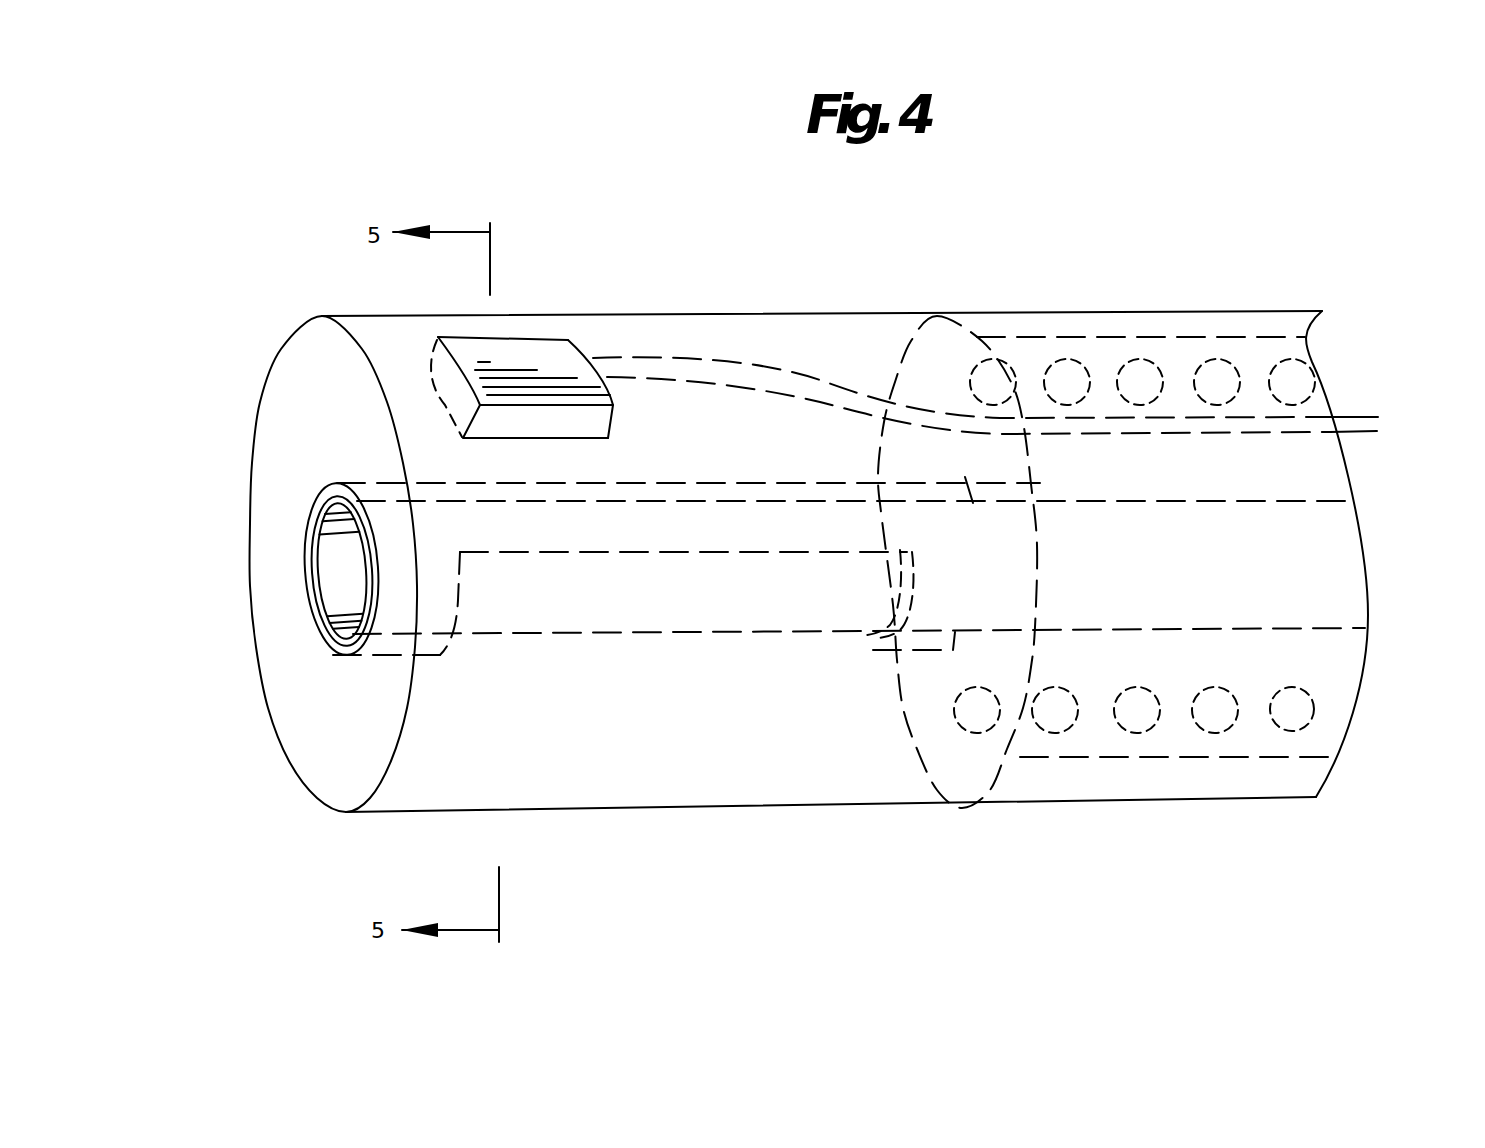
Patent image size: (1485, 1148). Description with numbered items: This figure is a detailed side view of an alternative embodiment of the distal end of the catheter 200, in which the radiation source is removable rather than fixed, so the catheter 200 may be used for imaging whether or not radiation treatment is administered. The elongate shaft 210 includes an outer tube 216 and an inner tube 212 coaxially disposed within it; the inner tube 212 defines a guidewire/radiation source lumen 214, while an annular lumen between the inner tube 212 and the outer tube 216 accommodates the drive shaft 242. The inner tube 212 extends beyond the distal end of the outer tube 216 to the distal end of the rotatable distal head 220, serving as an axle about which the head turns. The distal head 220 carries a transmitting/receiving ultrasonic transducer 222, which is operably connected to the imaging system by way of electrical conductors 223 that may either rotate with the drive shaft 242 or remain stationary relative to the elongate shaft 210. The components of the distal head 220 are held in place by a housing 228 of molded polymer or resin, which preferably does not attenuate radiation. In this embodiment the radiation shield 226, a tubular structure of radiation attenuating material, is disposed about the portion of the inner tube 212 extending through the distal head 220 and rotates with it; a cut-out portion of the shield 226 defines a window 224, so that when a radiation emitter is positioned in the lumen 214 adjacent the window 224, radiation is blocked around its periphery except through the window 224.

The catheter 200 is at (1186, 280).
The elongate shaft 210 is at (1370, 375).
The inner tube 212 is at (318, 597).
The guidewire/radiation source lumen 214 is at (335, 570).
The outer tube 216 is at (1003, 383).
The distal head 220 is at (686, 262).
The ultrasonic transducer 222 is at (558, 360).
The electrical conductors 223 is at (1376, 398).
The window 224 is at (707, 618).
The radiation shield 226 is at (322, 647).
The housing 228 is at (305, 397).
The drive shaft 242 is at (1303, 713).